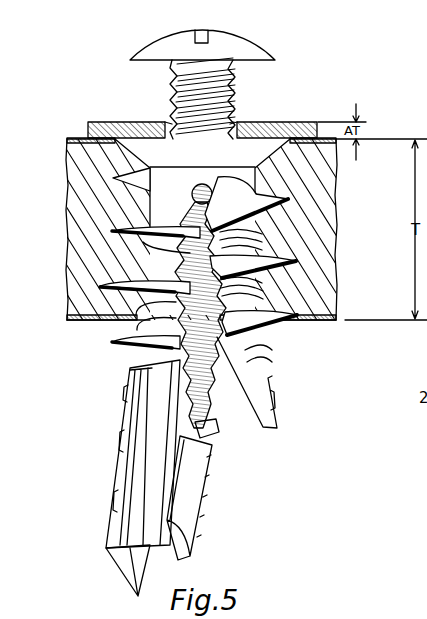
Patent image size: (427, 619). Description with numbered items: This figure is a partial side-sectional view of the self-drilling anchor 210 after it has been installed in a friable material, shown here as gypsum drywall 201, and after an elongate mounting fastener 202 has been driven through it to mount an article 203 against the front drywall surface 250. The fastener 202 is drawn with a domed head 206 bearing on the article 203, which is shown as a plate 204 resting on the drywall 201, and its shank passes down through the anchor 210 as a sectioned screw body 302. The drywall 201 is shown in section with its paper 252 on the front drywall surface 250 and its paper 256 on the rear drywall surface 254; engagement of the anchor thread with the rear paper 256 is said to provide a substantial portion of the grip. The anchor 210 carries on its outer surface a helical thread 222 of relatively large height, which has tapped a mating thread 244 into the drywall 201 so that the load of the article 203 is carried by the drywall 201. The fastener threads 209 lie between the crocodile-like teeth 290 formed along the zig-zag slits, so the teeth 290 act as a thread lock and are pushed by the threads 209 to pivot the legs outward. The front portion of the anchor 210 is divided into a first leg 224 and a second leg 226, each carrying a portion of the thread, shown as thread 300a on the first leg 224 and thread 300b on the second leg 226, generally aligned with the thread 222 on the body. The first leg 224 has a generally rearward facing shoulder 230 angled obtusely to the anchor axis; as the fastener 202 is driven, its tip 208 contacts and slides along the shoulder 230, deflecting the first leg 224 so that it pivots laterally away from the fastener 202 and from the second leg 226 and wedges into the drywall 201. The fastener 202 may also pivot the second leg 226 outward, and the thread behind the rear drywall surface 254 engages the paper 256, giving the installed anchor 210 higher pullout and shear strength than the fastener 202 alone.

The drywall 201 is at (322, 204).
The elongate mounting fastener 202 is at (234, 81).
The article 203 is at (95, 121).
The mounting plate 204 is at (172, 108).
The screw head 206 is at (240, 36).
The fastener tip 208 is at (200, 437).
The fastener threads 209 is at (236, 112).
The self-drilling anchor 210 is at (207, 378).
The thread 222 is at (118, 236).
The first leg 224 is at (138, 481).
The second leg 226 is at (258, 400).
The shoulder 230 is at (215, 426).
The mating thread 244 is at (272, 246).
The front drywall surface 250 is at (321, 139).
The paper 252 is at (72, 138).
The rear drywall surface 254 is at (75, 320).
The paper 256 is at (80, 318).
The teeth 290 is at (132, 283).
The thread portion on first leg 300a is at (122, 358).
The thread portion on second leg 300b is at (292, 327).
The screw shank section 302 is at (150, 167).